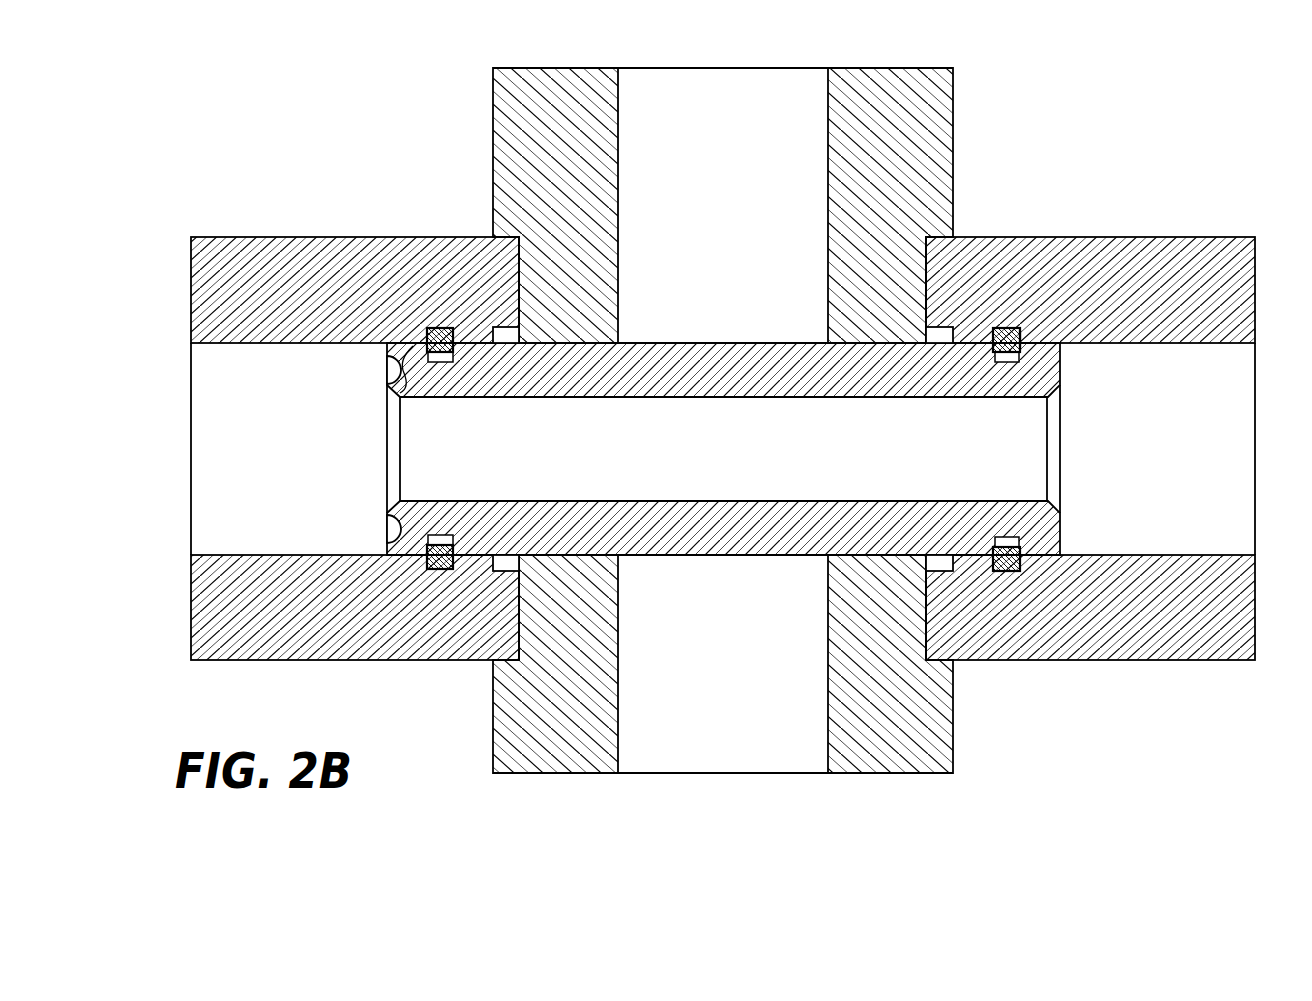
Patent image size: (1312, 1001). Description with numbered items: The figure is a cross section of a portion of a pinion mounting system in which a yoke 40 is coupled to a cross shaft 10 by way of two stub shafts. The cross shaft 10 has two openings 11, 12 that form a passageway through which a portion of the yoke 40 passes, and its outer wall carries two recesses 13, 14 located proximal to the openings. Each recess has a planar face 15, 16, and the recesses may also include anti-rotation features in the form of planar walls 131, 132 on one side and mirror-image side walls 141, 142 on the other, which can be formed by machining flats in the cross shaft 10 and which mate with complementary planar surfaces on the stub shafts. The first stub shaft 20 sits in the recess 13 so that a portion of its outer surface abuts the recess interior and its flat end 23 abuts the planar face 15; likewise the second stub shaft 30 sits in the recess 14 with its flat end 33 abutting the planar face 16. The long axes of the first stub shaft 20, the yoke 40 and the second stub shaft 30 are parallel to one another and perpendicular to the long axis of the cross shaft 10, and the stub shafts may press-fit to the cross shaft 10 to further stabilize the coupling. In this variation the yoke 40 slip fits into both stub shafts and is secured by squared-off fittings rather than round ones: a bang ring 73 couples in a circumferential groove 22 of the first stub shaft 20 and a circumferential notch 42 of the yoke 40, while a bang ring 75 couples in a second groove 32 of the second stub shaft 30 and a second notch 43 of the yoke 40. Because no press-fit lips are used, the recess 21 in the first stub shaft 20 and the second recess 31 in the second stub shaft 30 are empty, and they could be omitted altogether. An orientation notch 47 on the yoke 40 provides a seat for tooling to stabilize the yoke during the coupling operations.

The cross shaft 10 is at (851, 98).
The opening 11 is at (590, 343).
The opening 12 is at (858, 345).
The recess 13 is at (515, 275).
The recess 14 is at (931, 279).
The planar face 15 is at (520, 608).
The planar face 16 is at (925, 608).
The planar wall 131 is at (514, 250).
The planar wall 132 is at (506, 657).
The side wall 141 is at (940, 248).
The side wall 142 is at (944, 655).
The first stub shaft 20 is at (205, 293).
The recess 21 is at (503, 326).
The circumferential groove 22 is at (433, 327).
The flat end 23 is at (517, 592).
The second stub shaft 30 is at (1203, 288).
The second recess 31 is at (947, 327).
The second groove 32 is at (1007, 328).
The flat end 33 is at (930, 576).
The yoke 40 is at (720, 366).
The circumferential notch 42 is at (440, 363).
The second notch 43 is at (1013, 362).
The orientation notch 47 is at (388, 364).
The bang ring 73 is at (387, 393).
The bang ring 75 is at (1021, 336).